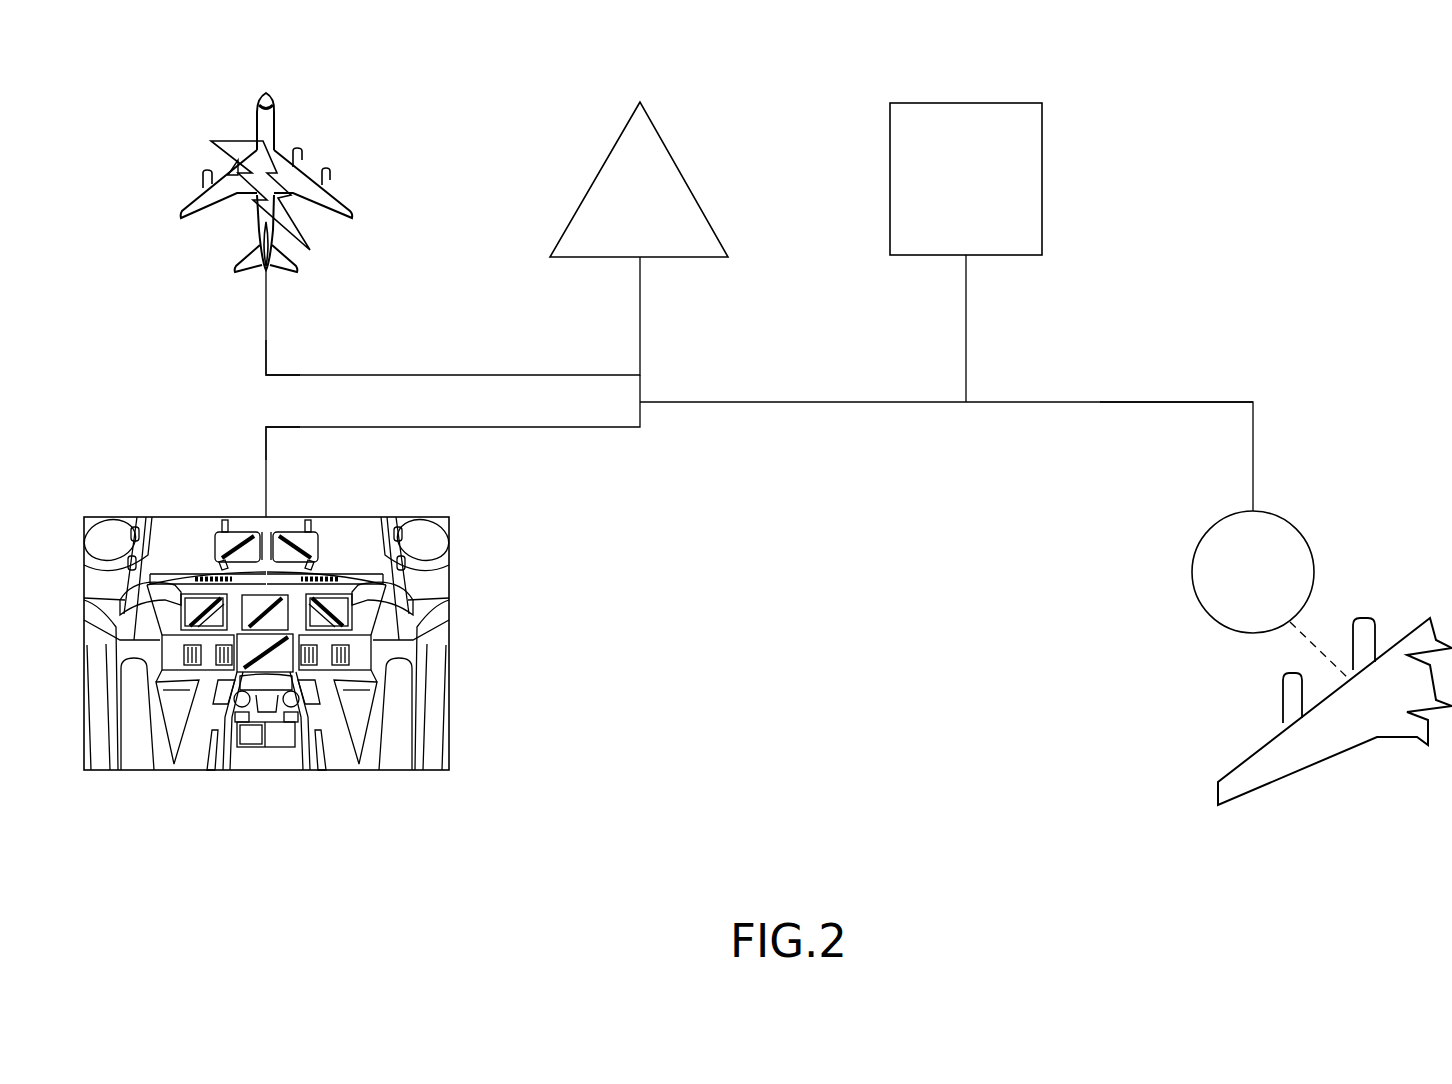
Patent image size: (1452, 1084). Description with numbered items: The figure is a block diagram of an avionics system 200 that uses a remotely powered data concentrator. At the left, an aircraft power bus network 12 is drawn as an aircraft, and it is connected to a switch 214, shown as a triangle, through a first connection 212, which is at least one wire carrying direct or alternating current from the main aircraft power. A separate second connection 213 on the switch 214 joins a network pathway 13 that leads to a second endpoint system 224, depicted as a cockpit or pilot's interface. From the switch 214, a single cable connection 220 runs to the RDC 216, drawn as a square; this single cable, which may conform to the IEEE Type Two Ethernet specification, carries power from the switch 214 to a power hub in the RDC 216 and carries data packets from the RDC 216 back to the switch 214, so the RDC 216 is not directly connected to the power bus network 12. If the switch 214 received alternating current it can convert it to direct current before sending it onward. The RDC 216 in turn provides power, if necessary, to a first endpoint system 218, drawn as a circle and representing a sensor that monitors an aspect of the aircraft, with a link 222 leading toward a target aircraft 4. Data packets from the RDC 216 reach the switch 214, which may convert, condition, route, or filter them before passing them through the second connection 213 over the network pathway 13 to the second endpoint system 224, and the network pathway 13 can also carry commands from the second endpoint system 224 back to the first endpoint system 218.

The avionics system 200 is at (212, 75).
The aircraft power bus network 12 is at (248, 366).
The network pathway 13 is at (248, 437).
The first connection 212 is at (420, 375).
The second connection 213 is at (420, 427).
The switch 214 is at (598, 170).
The RDC 216 is at (966, 103).
The first endpoint system 218 is at (1285, 518).
The single cable connection 220 is at (808, 402).
The link to tracking node 222 is at (1128, 402).
The second endpoint system 224 is at (263, 770).
The target aircraft 4 is at (1328, 760).